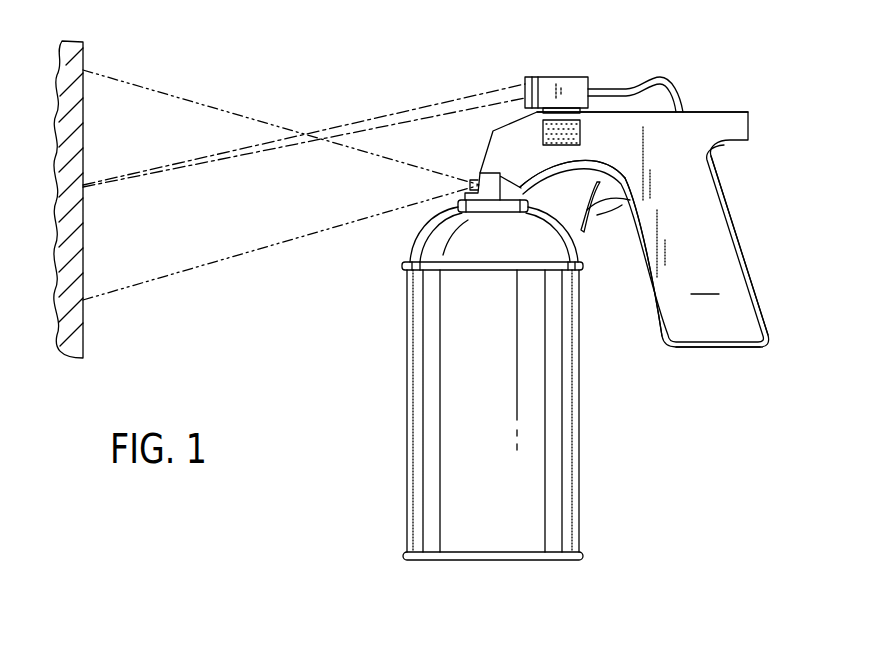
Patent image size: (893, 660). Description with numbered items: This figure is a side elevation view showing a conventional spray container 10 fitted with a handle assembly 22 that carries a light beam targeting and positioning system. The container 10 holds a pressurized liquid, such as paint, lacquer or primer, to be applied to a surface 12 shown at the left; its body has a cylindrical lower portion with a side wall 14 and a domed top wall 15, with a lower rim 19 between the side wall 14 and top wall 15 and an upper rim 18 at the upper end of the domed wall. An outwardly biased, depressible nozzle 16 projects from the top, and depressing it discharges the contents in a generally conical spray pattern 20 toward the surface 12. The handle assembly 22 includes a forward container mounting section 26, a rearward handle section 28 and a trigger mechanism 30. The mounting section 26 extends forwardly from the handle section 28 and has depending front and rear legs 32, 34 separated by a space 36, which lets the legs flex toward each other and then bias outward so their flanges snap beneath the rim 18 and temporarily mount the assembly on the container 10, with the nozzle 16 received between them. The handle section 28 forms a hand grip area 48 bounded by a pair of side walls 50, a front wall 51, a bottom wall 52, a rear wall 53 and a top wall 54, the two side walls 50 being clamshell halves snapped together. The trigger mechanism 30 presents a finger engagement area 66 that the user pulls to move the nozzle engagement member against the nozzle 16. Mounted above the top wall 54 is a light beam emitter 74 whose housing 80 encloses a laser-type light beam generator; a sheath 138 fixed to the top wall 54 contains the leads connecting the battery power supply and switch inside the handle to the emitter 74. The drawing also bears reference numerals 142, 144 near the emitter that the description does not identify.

The spray container 10 is at (366, 373).
The surface 12 is at (84, 270).
The side wall 14 is at (395, 418).
The domed top wall 15 is at (405, 253).
The nozzle 16 is at (478, 160).
The upper rim 18 is at (460, 207).
The lower rim 19 is at (408, 266).
The spray pattern 20 is at (186, 98).
The handle assembly 22 is at (744, 73).
The container mounting section 26 is at (468, 133).
The handle section 28 is at (760, 264).
The trigger mechanism 30 is at (610, 230).
The front leg 32 is at (470, 190).
The rear leg 34 is at (518, 177).
The space 36 is at (442, 242).
The hand grip area 48 is at (705, 235).
The side walls 50 is at (705, 282).
The front wall 51 is at (650, 282).
The bottom wall 52 is at (720, 349).
The rear wall 53 is at (735, 203).
The top wall 54 is at (700, 112).
The finger engagement area 66 is at (587, 210).
The light beam emitter 74 is at (570, 56).
The housing 80 is at (553, 70).
The sheath 138 is at (665, 80).
The battery housing 142 is at (585, 132).
The body edge 144 is at (520, 135).